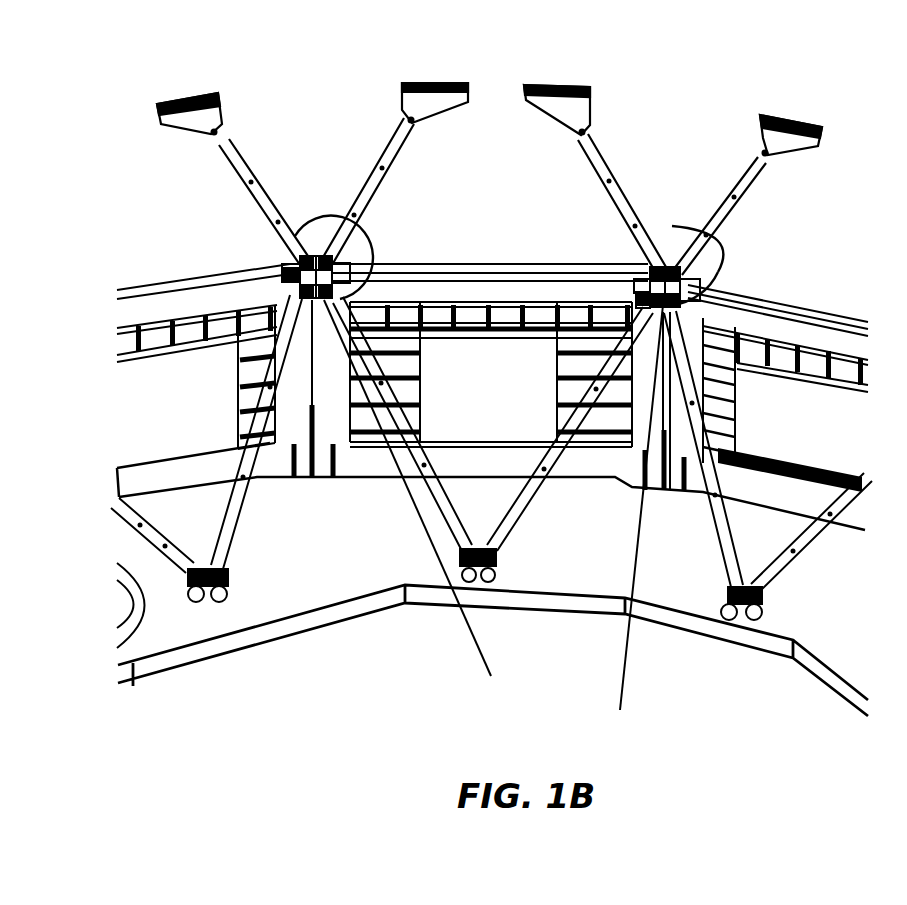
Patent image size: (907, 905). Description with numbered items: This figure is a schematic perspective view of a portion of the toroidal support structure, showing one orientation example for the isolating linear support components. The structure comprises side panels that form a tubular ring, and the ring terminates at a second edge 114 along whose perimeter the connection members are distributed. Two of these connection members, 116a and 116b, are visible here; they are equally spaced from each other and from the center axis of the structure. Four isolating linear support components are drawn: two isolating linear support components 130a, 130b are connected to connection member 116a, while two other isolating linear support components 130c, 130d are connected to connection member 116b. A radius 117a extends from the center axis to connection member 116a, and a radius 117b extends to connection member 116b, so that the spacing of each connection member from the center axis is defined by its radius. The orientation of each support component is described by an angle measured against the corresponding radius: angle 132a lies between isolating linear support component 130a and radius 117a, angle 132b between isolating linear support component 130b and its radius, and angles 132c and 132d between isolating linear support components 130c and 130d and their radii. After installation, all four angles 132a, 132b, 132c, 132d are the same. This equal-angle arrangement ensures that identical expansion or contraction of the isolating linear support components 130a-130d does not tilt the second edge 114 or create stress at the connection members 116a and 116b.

The second edge 114 is at (462, 262).
The connection member 116a is at (285, 259).
The connection member 116b is at (643, 252).
The radius 117a is at (473, 640).
The radius 117b is at (630, 667).
The isolating linear support component 130a is at (243, 200).
The isolating linear support component 130b is at (365, 173).
The isolating linear support component 130c is at (613, 170).
The isolating linear support component 130d is at (763, 187).
The angle 132a is at (292, 233).
The angle 132b is at (380, 216).
The angle 132c is at (645, 245).
The angle 132d is at (723, 233).